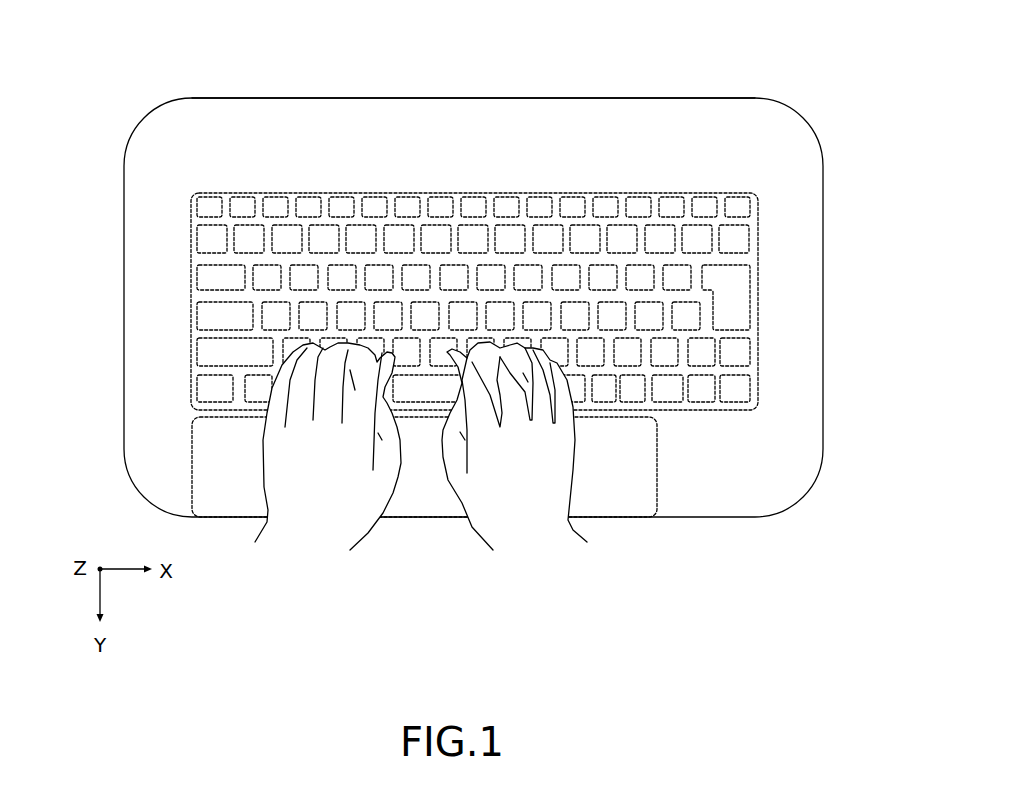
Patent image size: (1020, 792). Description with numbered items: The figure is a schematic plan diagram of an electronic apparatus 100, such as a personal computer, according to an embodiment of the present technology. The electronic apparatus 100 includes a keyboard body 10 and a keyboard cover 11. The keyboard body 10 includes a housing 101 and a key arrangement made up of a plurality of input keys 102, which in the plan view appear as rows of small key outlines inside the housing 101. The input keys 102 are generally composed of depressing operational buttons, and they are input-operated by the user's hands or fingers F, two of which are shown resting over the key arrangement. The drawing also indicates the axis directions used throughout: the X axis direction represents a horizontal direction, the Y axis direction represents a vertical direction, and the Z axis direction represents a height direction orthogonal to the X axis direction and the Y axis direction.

The electronic apparatus 100 is at (652, 73).
The keyboard body 10 is at (515, 97).
The housing 101 is at (405, 98).
The keyboard cover 11 is at (222, 191).
The input keys 102 is at (328, 240).
The user's hands (fingers) F is at (490, 515).